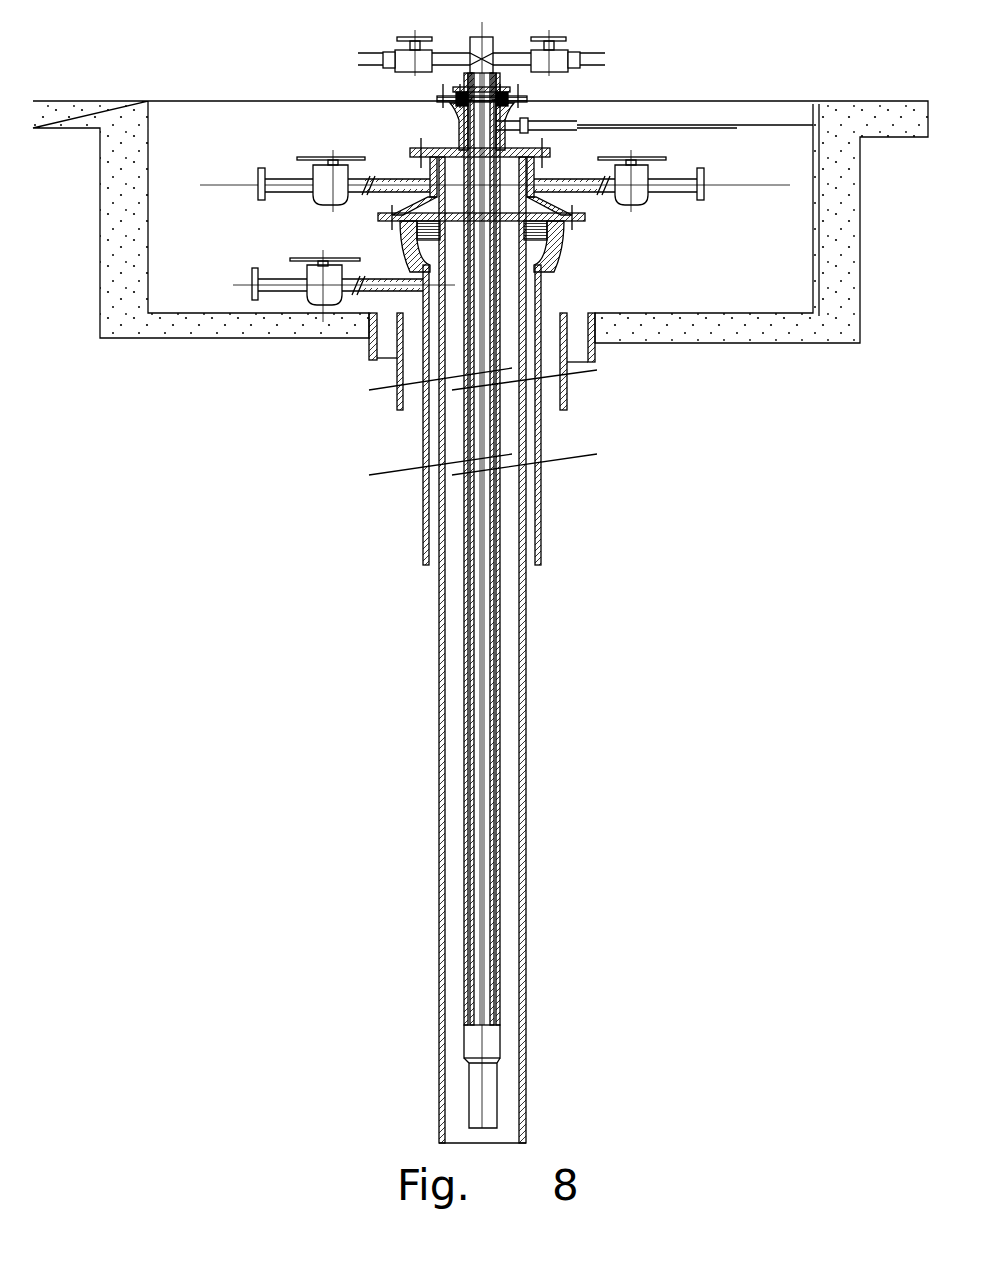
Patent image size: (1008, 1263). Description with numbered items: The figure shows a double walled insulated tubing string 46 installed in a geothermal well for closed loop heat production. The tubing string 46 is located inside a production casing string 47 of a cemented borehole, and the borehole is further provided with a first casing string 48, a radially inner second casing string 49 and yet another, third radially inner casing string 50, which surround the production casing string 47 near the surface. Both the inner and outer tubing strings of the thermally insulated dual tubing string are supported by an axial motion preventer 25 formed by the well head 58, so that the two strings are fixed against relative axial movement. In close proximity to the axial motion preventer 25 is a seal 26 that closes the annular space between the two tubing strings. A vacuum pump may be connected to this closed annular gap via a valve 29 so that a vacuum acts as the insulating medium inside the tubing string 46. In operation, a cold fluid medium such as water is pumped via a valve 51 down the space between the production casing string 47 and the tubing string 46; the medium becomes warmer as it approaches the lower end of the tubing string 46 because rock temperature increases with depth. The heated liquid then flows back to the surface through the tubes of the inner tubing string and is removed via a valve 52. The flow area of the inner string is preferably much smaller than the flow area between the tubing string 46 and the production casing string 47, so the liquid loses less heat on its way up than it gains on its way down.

The valve 52 is at (410, 62).
The seal 26 is at (493, 95).
The valve 29 is at (562, 125).
The axial motion preventer 25 is at (450, 103).
The valve 51 is at (260, 187).
The well head 58 is at (537, 170).
The first casing string 48 is at (369, 340).
The second casing string 49 is at (397, 408).
The third casing string 50 is at (423, 562).
The double walled insulated tubing string 46 is at (495, 765).
The production casing string 47 is at (526, 783).